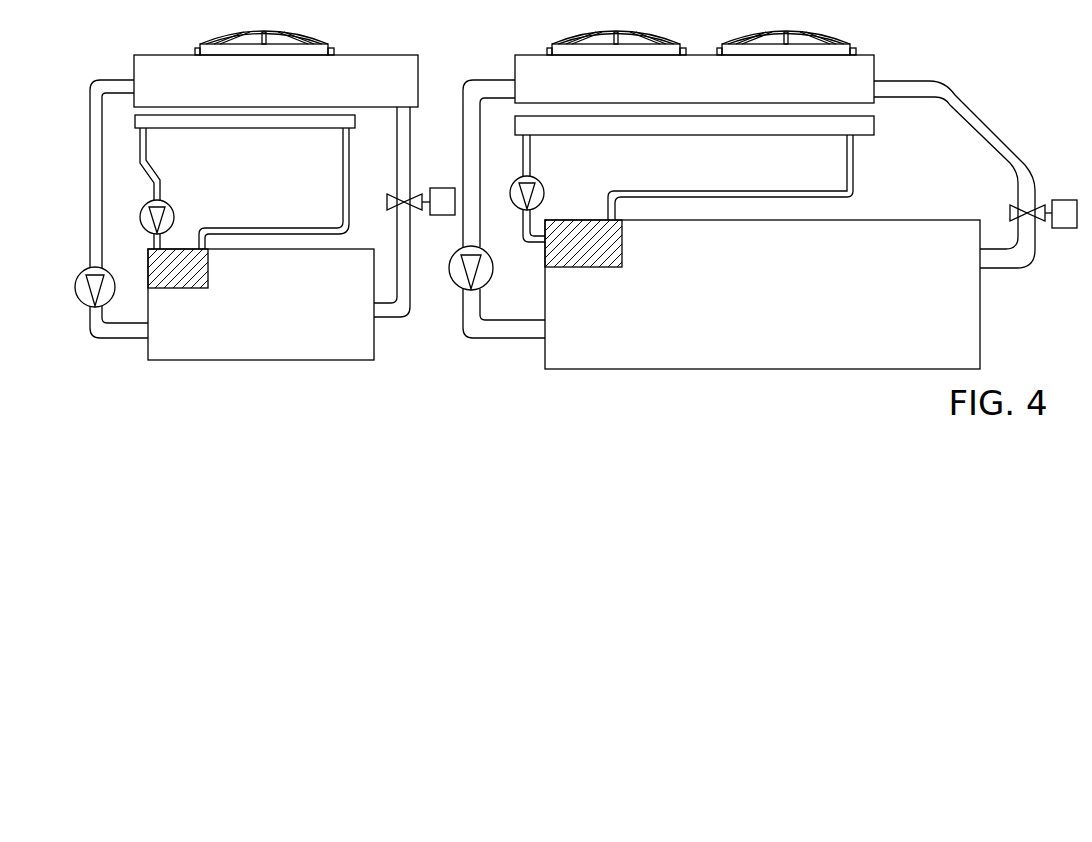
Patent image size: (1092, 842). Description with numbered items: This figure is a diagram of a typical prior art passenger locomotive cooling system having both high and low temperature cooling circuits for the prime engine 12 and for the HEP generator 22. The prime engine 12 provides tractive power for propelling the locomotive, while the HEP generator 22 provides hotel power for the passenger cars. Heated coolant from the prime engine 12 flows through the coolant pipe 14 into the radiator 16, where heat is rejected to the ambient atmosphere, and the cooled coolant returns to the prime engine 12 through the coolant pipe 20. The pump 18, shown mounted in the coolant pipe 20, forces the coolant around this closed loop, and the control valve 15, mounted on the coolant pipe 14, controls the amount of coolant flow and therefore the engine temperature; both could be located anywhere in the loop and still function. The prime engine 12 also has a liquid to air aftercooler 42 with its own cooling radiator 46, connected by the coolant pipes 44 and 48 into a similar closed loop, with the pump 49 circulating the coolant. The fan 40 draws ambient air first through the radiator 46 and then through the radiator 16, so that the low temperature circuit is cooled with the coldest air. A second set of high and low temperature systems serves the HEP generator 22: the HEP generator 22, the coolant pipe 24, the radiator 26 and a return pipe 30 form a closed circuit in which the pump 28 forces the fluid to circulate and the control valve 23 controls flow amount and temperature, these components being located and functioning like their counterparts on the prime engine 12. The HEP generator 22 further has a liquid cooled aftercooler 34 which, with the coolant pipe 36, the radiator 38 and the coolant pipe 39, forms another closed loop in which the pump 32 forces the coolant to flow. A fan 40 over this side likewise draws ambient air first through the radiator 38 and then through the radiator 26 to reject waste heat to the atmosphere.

The prime engine 12 is at (778, 318).
The coolant pipe 14 is at (1000, 270).
The control valve 15 is at (1062, 198).
The radiator 16 is at (853, 80).
The pump 18 is at (450, 286).
The coolant pipe 20 is at (508, 338).
The HEP generator 22 is at (345, 325).
The control valve 23 is at (436, 217).
The coolant pipe 24 is at (408, 133).
The radiator 26 is at (230, 80).
The pump 28 is at (97, 277).
The conduit 30 is at (125, 338).
The pump 32 is at (175, 214).
The aftercooler 34 is at (173, 290).
The coolant pipe 36 is at (341, 200).
The radiator 38 is at (292, 128).
The coolant pipe 39 is at (150, 168).
The fan 40 is at (846, 44).
The aftercooler 42 is at (593, 270).
The coolant pipe 44 is at (707, 191).
The radiator 46 is at (876, 128).
The coolant pipe 48 is at (537, 245).
The pump 49 is at (541, 185).